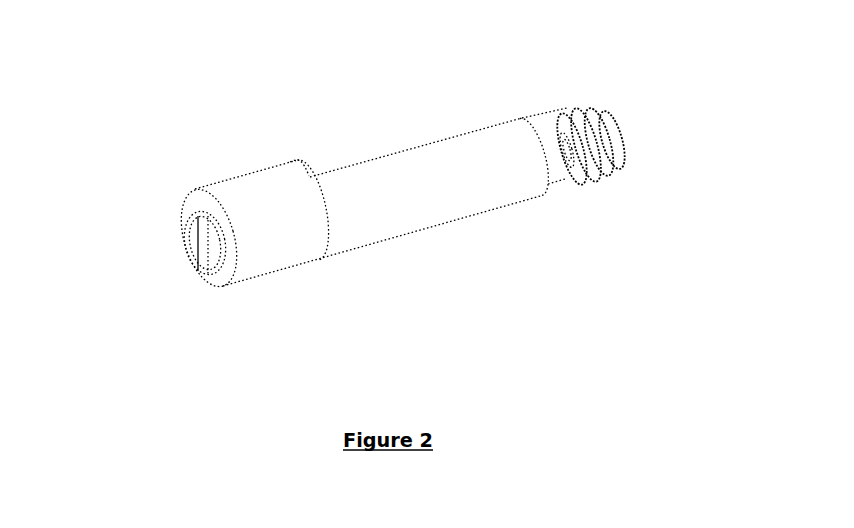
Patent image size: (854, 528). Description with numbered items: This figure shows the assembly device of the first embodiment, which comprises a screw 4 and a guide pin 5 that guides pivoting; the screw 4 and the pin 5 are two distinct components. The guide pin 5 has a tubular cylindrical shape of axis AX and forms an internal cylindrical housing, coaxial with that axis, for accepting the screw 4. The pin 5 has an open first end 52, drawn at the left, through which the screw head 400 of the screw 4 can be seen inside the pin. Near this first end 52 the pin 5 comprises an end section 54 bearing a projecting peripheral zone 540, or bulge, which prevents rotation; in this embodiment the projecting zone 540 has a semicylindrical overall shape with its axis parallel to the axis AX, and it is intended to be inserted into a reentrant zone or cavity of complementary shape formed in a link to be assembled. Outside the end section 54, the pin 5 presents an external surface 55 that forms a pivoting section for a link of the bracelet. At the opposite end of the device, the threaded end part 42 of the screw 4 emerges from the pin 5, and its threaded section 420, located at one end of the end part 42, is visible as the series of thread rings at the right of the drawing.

The screw 4 is at (187, 281).
The screw head 400 is at (195, 243).
The guide pin 5 is at (467, 218).
The open first end 52 is at (176, 233).
The end section 54 is at (292, 225).
The projecting peripheral zone 540 is at (265, 180).
The external surface 55 is at (365, 215).
The threaded end part 42 is at (568, 93).
The threaded section 420 is at (610, 146).